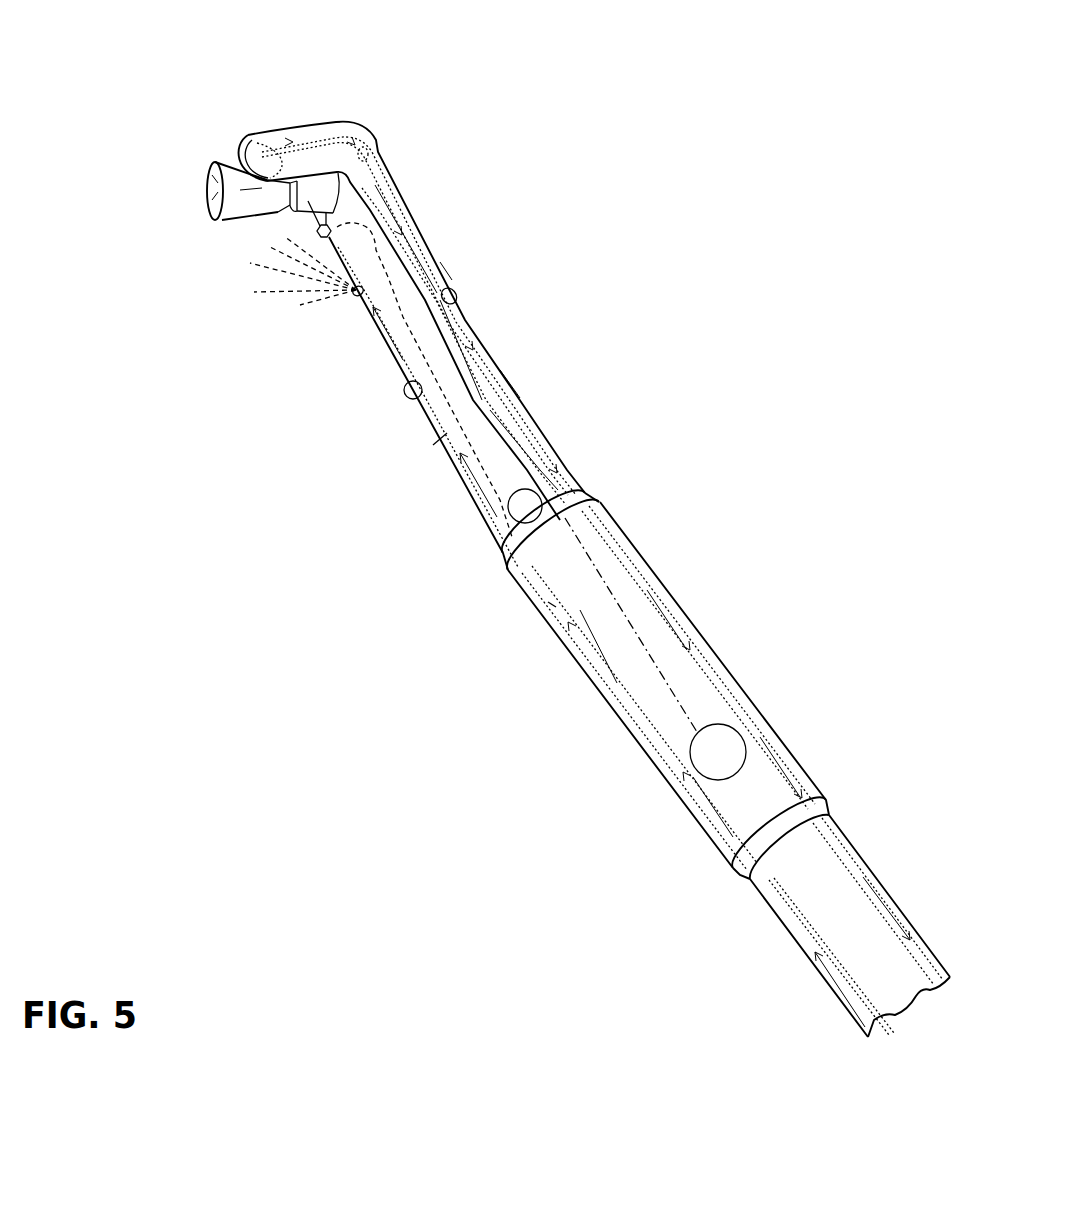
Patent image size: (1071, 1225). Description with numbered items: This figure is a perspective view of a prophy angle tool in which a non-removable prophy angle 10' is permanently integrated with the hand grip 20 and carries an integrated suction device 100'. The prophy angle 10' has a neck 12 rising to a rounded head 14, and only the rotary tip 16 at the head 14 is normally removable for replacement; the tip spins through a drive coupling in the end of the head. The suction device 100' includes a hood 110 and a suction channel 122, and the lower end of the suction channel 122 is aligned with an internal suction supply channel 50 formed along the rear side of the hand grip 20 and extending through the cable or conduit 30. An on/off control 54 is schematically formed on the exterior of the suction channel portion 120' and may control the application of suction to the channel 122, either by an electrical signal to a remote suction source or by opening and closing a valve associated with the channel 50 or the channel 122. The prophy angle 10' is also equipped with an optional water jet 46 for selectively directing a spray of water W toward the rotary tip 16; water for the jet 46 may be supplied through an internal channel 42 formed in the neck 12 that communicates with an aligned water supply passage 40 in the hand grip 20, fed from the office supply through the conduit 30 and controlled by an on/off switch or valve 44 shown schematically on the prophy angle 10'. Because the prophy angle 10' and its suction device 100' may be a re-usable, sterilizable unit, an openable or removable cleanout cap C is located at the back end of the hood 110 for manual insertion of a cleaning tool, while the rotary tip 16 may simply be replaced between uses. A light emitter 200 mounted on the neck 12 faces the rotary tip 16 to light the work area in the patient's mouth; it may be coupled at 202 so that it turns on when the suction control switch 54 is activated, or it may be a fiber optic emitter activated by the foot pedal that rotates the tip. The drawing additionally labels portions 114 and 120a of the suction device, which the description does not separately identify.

The prophy angle 10' is at (401, 403).
The prophy angle neck 12 is at (413, 331).
The prophy head 14 is at (318, 229).
The rotary tip 16 is at (234, 170).
The hand grip 20 is at (735, 675).
The supply cable or conduit 30 is at (902, 1015).
The water supply passage 40 is at (552, 603).
The internal water channel 42 is at (445, 435).
The on/off control switch or valve 44 is at (408, 396).
The water jet 46 is at (356, 293).
The internal suction supply channel 50 is at (637, 580).
The suction on/off control 54 is at (460, 293).
The suction device 100' is at (412, 289).
The suction hood 110 is at (300, 127).
The light guide 114 is at (318, 127).
The suction channel portion 120' is at (464, 346).
The fiber end 120a is at (507, 380).
The suction channel 122 is at (445, 262).
The light emitter 200 is at (322, 238).
The coupling 202 is at (436, 272).
The cleanout cap C is at (367, 152).
The spray of water W is at (272, 293).